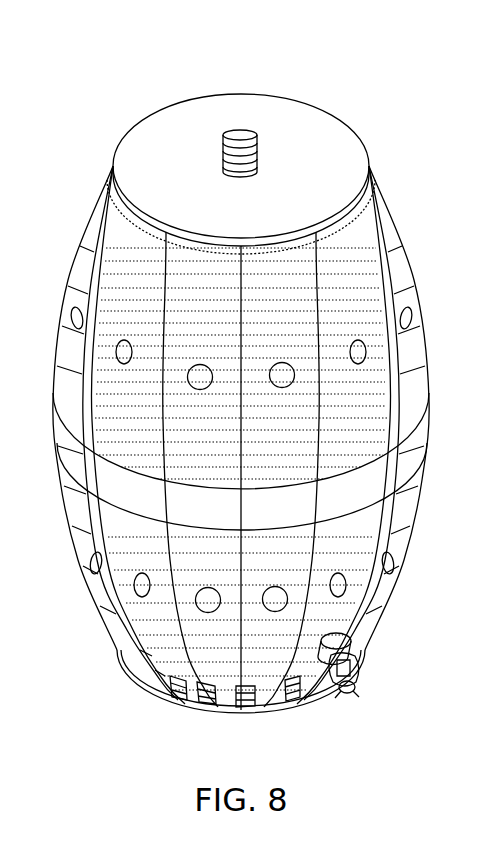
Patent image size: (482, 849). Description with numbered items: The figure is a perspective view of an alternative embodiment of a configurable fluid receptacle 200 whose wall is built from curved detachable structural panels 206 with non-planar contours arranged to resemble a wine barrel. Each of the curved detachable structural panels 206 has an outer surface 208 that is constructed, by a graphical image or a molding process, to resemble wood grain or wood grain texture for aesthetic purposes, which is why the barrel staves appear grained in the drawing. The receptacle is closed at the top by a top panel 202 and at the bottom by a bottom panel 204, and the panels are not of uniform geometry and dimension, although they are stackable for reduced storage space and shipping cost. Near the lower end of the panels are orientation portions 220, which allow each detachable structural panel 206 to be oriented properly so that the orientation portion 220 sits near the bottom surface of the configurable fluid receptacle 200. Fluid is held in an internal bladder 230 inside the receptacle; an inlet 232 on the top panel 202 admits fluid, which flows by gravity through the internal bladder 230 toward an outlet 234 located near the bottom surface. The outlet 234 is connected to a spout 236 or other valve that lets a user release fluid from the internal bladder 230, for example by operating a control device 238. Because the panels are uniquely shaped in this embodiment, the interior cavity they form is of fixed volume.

The configurable fluid receptacle 200 is at (136, 95).
The top panel 202 is at (243, 99).
The bottom panel 204 is at (137, 676).
The curved detachable structural panels 206 is at (93, 230).
The outer surface 208 is at (461, 781).
The orientation portions 220 is at (183, 692).
The internal bladder 230 is at (413, 392).
The inlet 232 is at (223, 140).
The outlet 234 is at (349, 638).
The spout 236 is at (355, 688).
The control device 238 is at (352, 665).